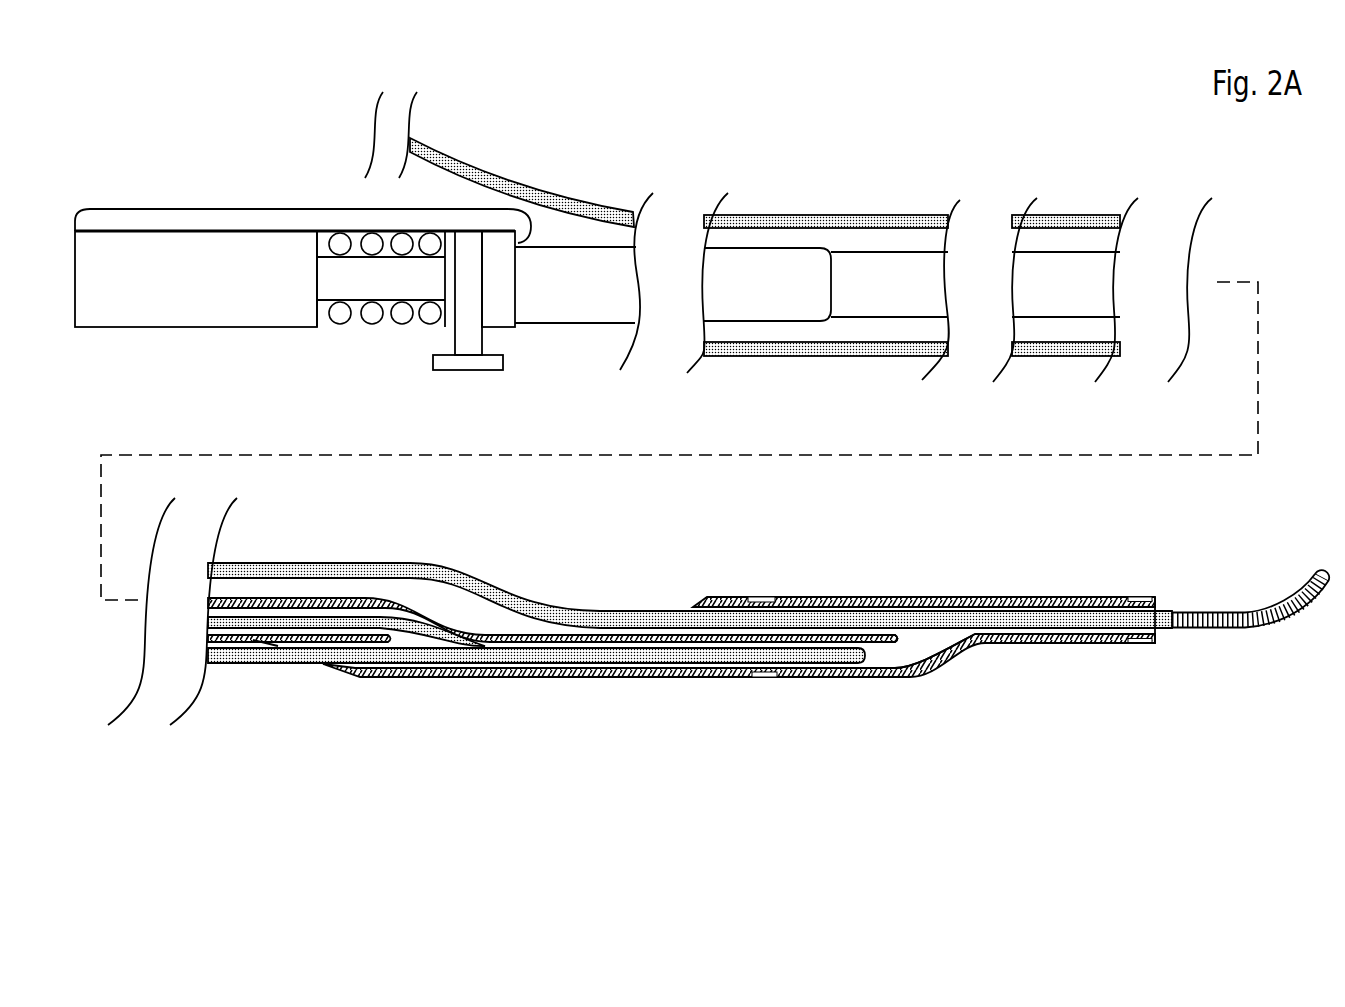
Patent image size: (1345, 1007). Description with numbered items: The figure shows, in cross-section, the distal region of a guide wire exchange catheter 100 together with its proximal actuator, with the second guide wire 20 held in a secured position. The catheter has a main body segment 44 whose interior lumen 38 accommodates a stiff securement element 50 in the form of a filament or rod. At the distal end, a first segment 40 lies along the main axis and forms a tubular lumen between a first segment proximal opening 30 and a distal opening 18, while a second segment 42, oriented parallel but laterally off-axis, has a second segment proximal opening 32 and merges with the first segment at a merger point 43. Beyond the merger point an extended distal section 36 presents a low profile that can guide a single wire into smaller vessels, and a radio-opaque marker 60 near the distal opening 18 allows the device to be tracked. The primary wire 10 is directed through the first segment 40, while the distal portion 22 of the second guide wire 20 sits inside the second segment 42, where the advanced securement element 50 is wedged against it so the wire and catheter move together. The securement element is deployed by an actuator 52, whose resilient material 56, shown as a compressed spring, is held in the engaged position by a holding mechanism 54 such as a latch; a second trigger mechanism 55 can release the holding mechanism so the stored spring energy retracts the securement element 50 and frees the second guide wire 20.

The exchange catheter 100 is at (882, 178).
The first or primary wire 10 is at (445, 155).
The distal opening 18 is at (1162, 611).
The second or secondary guide wire 20 is at (847, 357).
The distal portion of second guide wire 22 is at (832, 660).
The first segment proximal opening 30 is at (696, 597).
The second segment proximal opening 32 is at (320, 672).
The extended distal section 36 is at (1090, 589).
The interior lumen 38 is at (240, 608).
The first segment 40 is at (953, 592).
The second segment 42 is at (690, 679).
The merger point 43 is at (937, 643).
The main body segment 44 is at (1062, 263).
The securement element 50 is at (410, 642).
The actuator 52 is at (183, 208).
The holding mechanism 54 is at (472, 207).
The second trigger mechanism 55 is at (433, 377).
The resilient material 56 is at (333, 332).
The radio-opaque marker 60 is at (1142, 645).